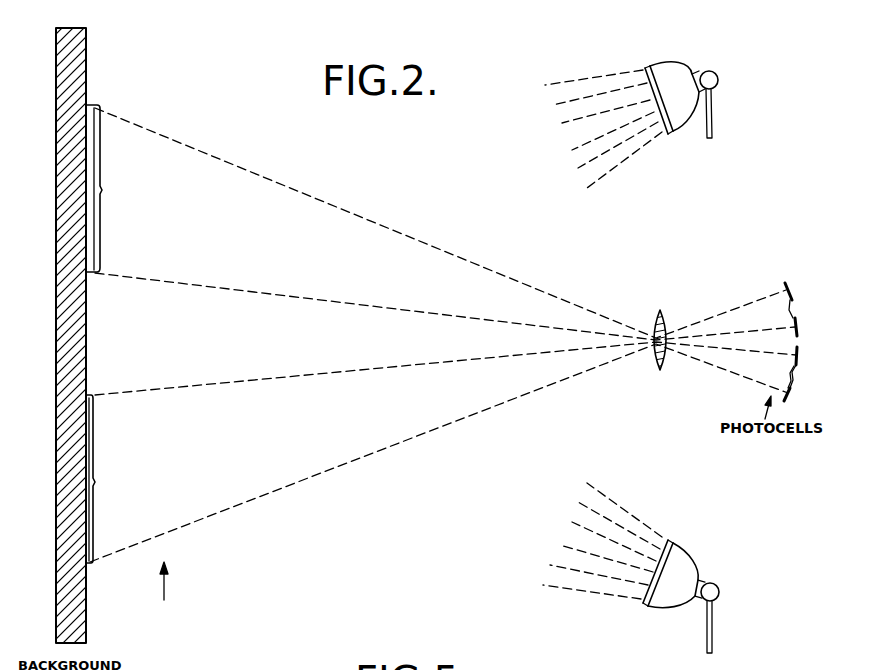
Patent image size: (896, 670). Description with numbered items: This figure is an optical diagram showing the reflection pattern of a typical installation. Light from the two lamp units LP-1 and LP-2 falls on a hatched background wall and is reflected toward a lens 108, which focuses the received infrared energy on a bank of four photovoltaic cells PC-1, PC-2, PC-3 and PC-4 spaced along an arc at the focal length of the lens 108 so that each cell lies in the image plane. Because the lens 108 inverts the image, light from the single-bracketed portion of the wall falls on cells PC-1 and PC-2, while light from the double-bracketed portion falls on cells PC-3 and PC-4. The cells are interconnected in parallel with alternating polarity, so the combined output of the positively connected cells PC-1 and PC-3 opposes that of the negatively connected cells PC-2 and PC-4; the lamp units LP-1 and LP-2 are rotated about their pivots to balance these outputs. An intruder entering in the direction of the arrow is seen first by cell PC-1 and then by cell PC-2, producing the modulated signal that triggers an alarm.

The lens 108 is at (662, 310).
The lamp unit LP-1 is at (673, 64).
The lamp unit LP-2 is at (696, 554).
The photovoltaic cell PC-1 is at (808, 300).
The photovoltaic cell PC-2 is at (815, 328).
The photovoltaic cell PC-3 is at (812, 367).
The photovoltaic cell PC-4 is at (806, 395).